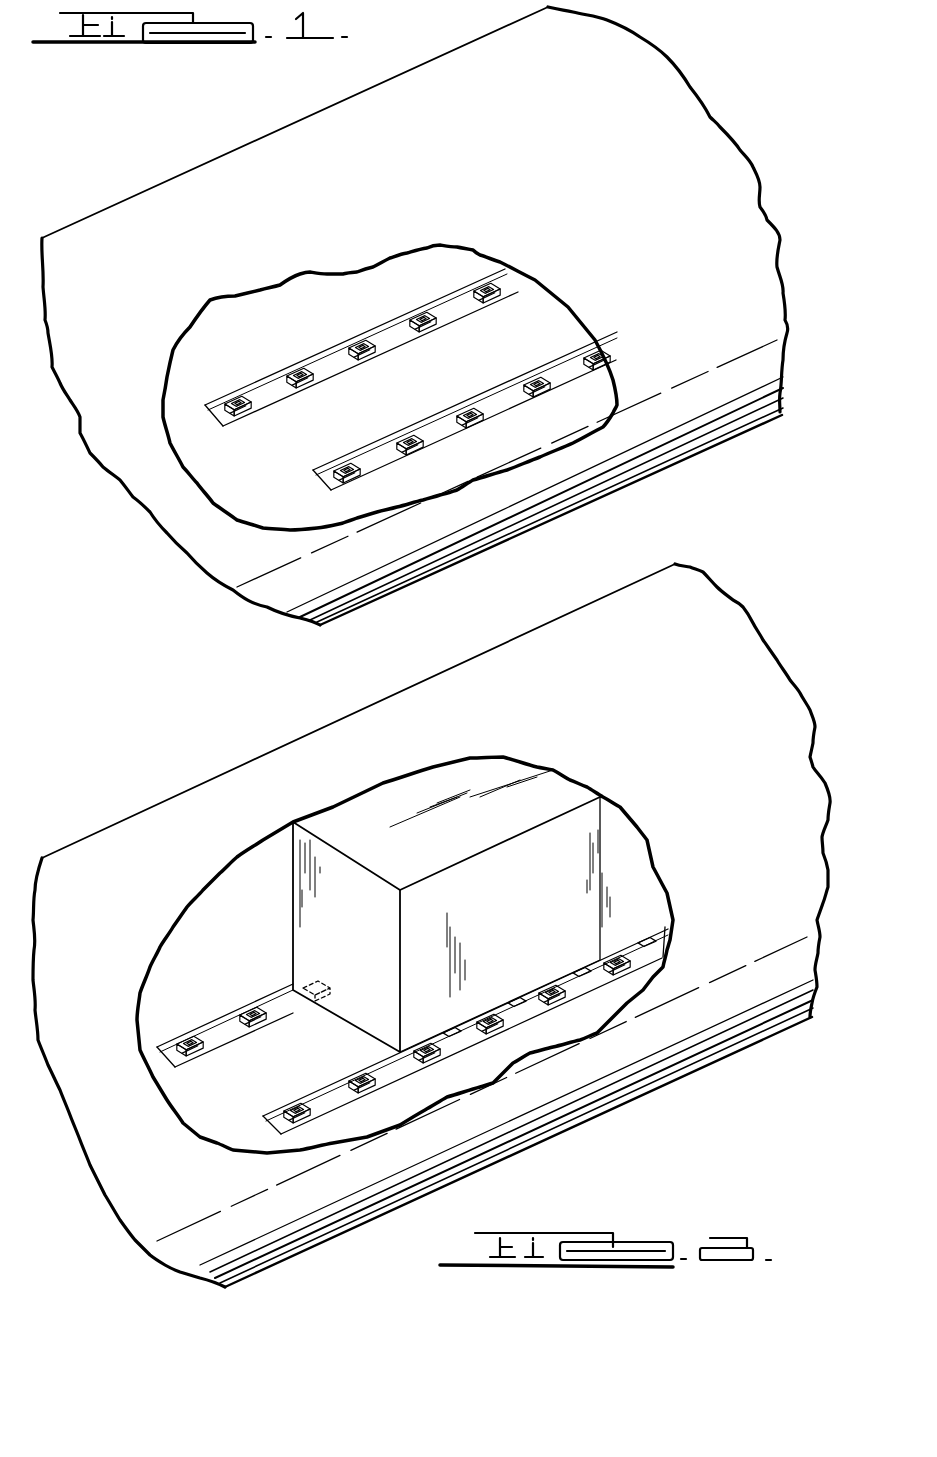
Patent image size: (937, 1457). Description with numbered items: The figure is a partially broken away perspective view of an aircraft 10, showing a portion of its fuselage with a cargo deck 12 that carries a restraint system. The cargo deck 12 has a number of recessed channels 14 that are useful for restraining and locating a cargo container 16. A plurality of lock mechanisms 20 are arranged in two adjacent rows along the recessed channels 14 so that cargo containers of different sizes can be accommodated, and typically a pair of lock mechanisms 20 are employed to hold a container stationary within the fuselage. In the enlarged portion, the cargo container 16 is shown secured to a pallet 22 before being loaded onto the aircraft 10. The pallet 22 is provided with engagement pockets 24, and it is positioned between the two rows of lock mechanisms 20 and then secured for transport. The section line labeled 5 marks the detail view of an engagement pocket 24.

In FIG. 1, the aircraft 10 is at (195, 158).
In FIG. 2, the aircraft 10 is at (200, 752).
In FIG. 1, the cargo deck 12 is at (435, 276).
In FIG. 2, the cargo deck 12 is at (205, 972).
In FIG. 1, the recessed channels 14 is at (266, 392).
In FIG. 2, the recessed channels 14 is at (213, 1036).
In FIG. 2, the cargo container 16 is at (562, 794).
In FIG. 1, the lock mechanism 20 is at (358, 347).
In FIG. 2, the lock mechanism 20 is at (345, 977).
In FIG. 2, the pallet 22 is at (668, 932).
In FIG. 2, the engagement pockets 24 is at (584, 977).
In FIG. 2, the section line 5 is at (527, 1035).